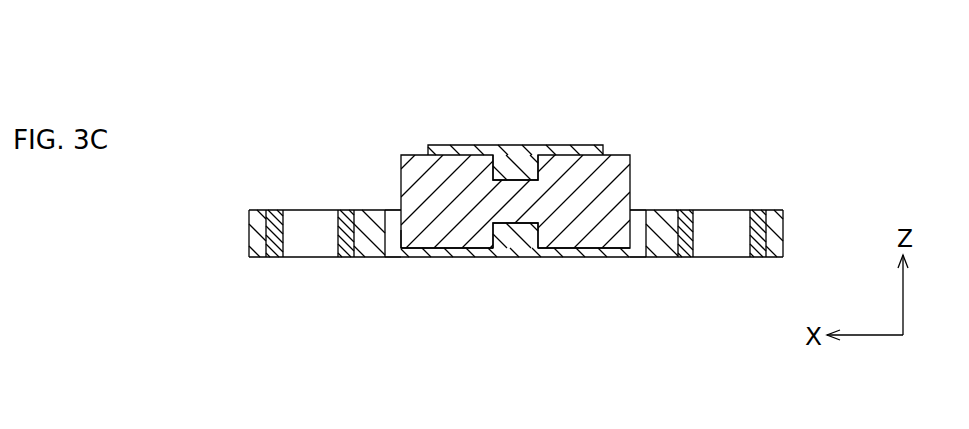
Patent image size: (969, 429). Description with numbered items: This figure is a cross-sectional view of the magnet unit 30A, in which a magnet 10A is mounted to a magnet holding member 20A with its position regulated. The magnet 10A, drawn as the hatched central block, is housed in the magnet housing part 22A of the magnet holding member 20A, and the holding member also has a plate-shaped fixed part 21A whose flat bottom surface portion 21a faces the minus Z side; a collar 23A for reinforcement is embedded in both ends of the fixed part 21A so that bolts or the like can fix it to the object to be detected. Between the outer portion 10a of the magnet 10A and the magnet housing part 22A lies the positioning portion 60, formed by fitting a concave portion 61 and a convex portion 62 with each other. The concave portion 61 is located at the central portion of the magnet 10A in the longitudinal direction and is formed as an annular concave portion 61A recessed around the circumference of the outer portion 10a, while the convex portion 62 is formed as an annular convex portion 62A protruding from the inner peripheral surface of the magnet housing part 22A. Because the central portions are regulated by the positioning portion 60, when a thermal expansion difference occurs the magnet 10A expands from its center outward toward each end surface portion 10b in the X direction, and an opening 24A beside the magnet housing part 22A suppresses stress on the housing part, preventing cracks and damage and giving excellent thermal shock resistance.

The magnet unit 30A is at (518, 204).
The magnet 10A is at (506, 222).
The outer portion 10a is at (463, 250).
The end surface portion 10b is at (418, 258).
The magnet holding member 20A is at (587, 148).
The fixed part 21A is at (257, 252).
The bottom surface portion 21a is at (578, 257).
The magnet housing part 22A is at (600, 248).
The collar 23A is at (275, 212).
The opening 24A is at (395, 215).
The positioning portion 60 is at (516, 187).
The concave portion 61 is at (516, 283).
The annular concave portion 61A is at (520, 252).
The convex portion 62 is at (536, 122).
The annular convex portion 62A is at (532, 150).